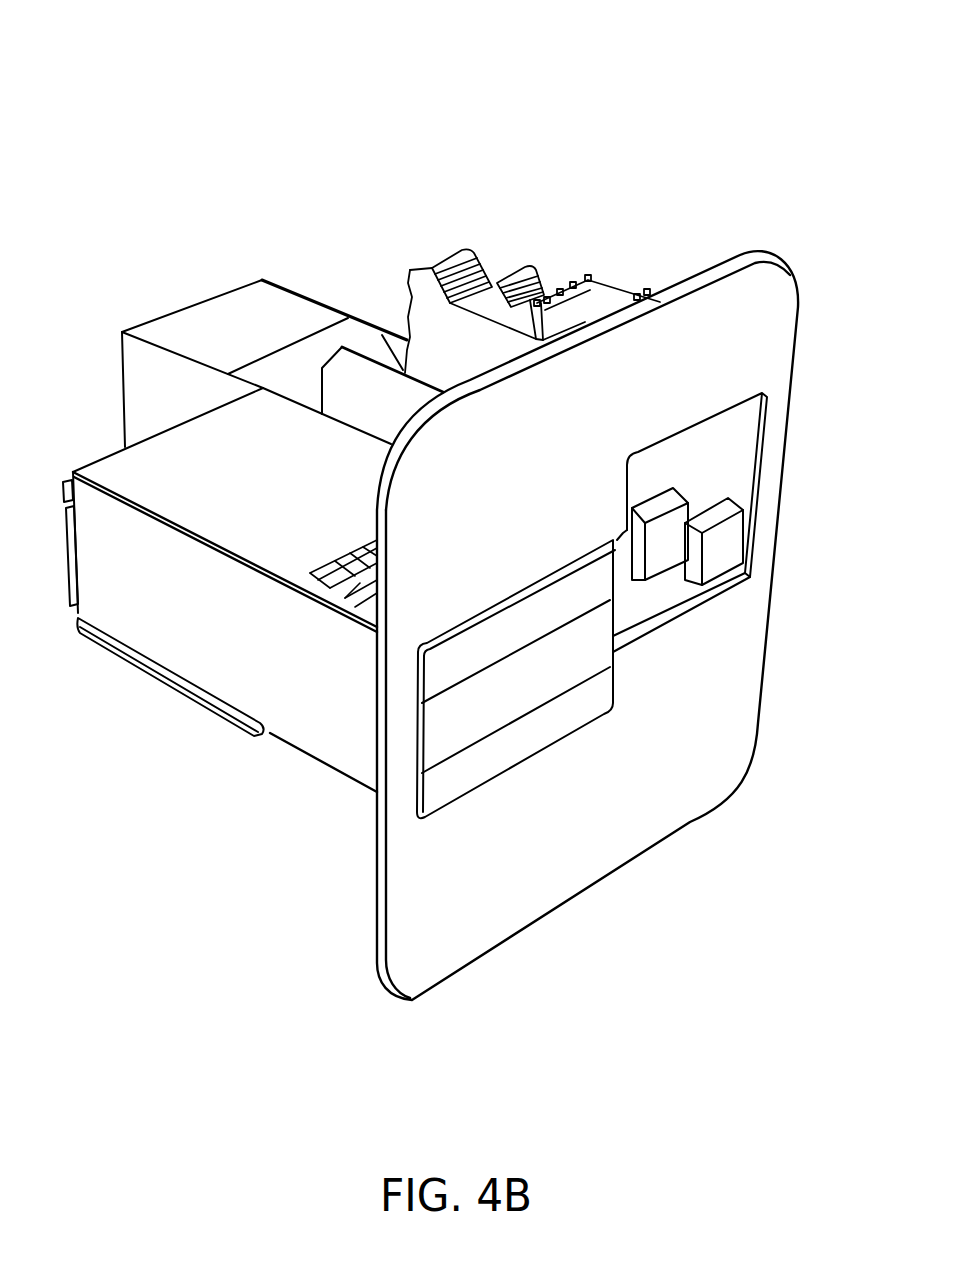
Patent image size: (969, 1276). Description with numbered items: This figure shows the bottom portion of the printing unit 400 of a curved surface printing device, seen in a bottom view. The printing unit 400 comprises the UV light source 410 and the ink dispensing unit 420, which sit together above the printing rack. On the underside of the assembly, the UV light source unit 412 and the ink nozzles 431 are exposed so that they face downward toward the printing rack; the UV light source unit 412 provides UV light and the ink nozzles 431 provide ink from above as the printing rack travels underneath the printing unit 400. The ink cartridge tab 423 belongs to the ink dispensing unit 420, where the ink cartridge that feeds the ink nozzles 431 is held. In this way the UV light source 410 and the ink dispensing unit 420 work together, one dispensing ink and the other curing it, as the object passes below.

The printing unit 400 is at (196, 109).
The UV light source 410 is at (118, 463).
The ink dispensing unit 420 is at (218, 313).
The ink cartridge tab 423 is at (468, 250).
The ink nozzles 431 is at (673, 517).
The UV light source unit 412 is at (453, 730).